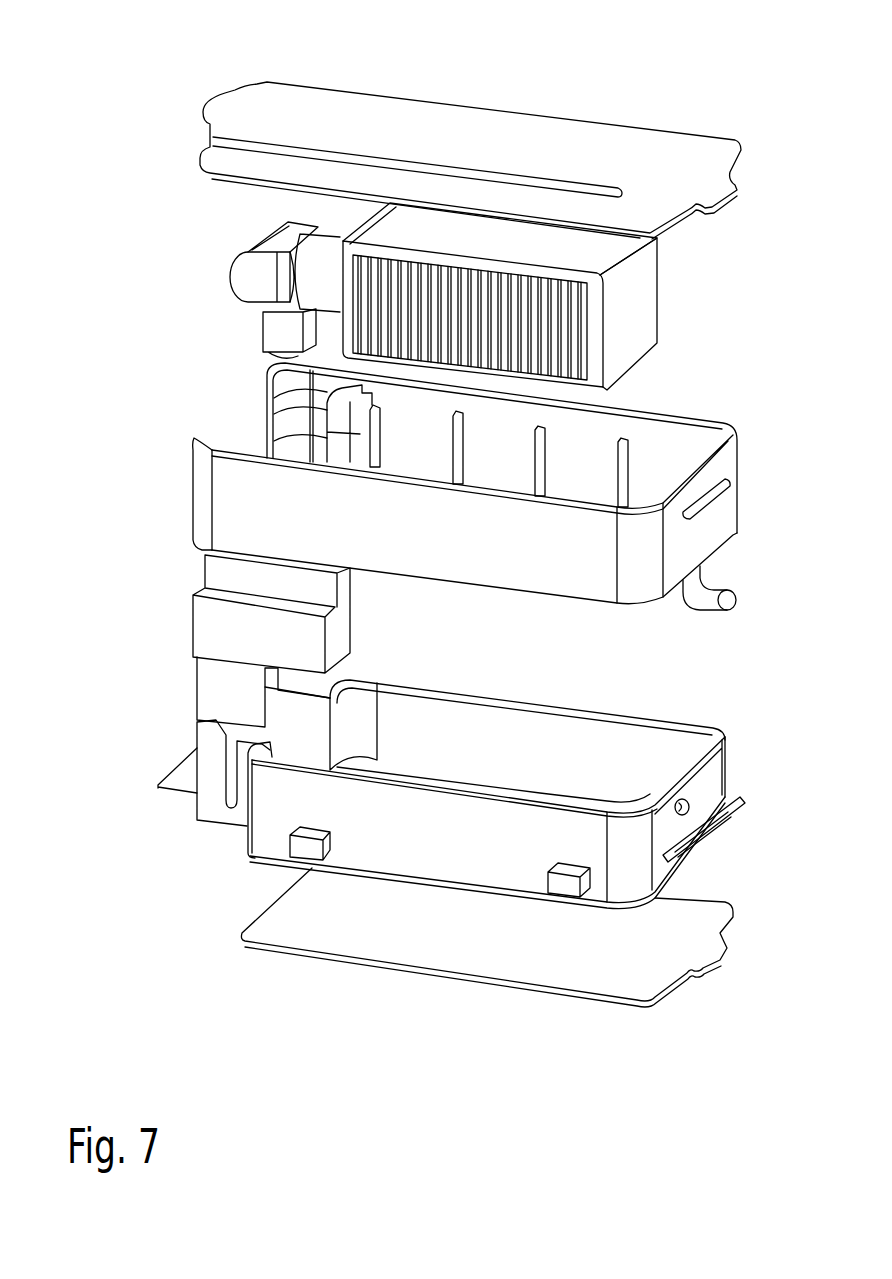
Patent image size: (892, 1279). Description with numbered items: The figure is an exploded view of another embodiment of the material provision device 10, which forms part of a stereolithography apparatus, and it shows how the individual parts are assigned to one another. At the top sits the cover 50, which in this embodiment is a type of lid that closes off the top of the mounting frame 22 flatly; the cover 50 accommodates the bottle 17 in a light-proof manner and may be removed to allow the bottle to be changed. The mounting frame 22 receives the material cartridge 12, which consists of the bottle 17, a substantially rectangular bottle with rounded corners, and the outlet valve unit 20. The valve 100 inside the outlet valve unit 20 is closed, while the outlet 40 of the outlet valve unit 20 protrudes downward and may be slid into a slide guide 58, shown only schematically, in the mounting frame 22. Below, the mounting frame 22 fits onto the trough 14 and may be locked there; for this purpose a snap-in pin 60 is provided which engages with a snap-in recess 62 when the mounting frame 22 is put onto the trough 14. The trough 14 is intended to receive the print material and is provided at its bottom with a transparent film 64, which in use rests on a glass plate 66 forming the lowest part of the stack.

The material provision device 10 is at (322, 1018).
The material cartridge 12 is at (645, 302).
The trough 14 is at (640, 738).
The bottle 17 is at (637, 342).
The outlet valve unit 20 is at (222, 283).
The mounting frame 22 is at (722, 466).
The outlet 40 is at (273, 337).
The cover 50 is at (493, 128).
The slide guide 58 is at (283, 419).
The snap-in pin 60 is at (740, 584).
The snap-in recess 62 is at (692, 808).
The transparent film 64 is at (475, 793).
The glass plate 66 is at (468, 950).
The valve 100 is at (244, 253).